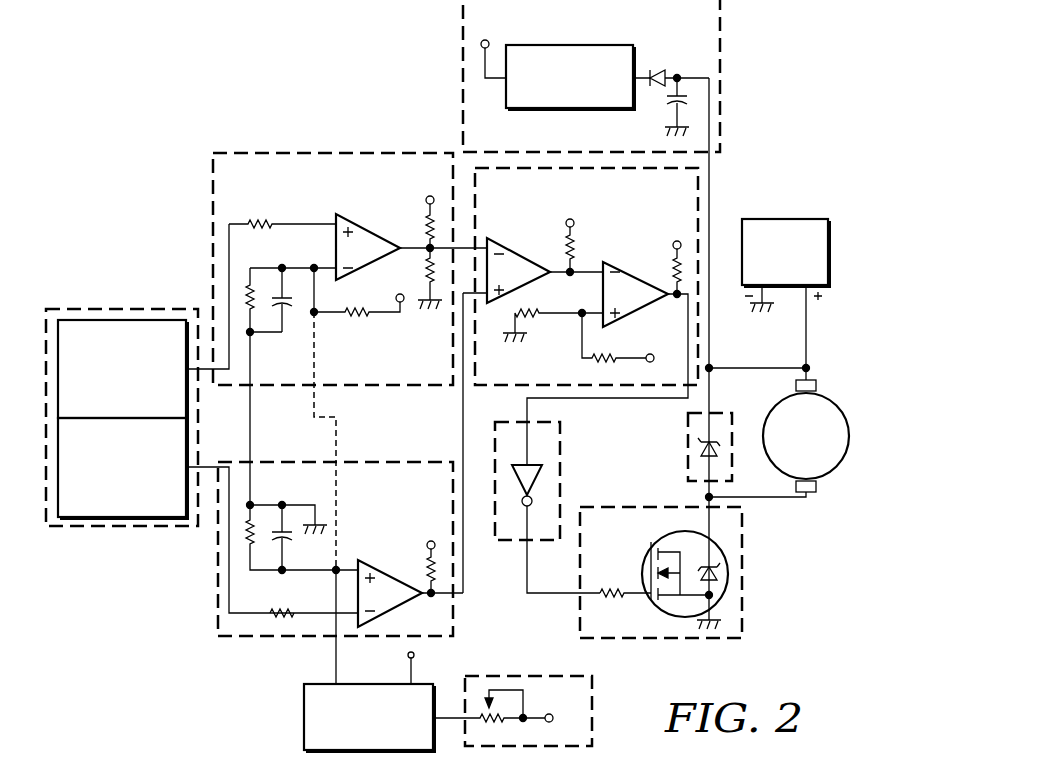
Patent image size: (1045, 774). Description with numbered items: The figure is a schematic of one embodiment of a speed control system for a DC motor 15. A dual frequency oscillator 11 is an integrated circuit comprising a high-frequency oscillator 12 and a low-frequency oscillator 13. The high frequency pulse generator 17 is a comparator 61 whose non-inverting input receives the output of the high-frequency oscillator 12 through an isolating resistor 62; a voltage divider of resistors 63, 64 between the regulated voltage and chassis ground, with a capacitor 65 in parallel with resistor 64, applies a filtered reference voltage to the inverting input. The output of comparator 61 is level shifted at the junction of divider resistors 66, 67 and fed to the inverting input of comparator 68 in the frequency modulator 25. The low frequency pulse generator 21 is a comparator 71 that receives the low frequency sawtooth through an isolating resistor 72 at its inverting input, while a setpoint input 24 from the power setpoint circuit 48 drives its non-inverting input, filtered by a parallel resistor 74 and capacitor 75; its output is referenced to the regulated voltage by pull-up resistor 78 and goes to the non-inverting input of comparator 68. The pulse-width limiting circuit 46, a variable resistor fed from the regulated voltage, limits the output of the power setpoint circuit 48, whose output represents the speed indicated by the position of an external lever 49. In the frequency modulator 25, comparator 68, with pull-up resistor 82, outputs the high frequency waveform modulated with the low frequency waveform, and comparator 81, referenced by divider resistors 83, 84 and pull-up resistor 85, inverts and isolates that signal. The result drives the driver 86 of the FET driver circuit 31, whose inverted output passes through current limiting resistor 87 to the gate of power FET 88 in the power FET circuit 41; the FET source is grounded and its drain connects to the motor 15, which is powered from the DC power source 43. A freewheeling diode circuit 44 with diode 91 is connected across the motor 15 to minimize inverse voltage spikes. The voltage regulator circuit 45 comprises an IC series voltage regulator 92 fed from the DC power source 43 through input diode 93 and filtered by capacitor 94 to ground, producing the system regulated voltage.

The dual frequency oscillator 11 is at (83, 528).
The high-frequency oscillator 12 is at (122, 320).
The low-frequency oscillator 13 is at (124, 526).
The DC motor 15 is at (822, 392).
The high frequency pulse generator 17 is at (327, 196).
The low frequency pulse generator 21 is at (218, 600).
The setpoint input 24 is at (98, 6).
The frequency modulator 25 is at (655, 207).
The FET driver circuit 31 is at (506, 545).
The power FET circuit 41 is at (743, 578).
The DC power source 43 is at (785, 219).
The freewheeling diode circuit 44 is at (688, 425).
The voltage regulator circuit 45 is at (722, 62).
The pulse-width limiting circuit 46 is at (594, 696).
The power setpoint circuit 48 is at (304, 722).
The external lever 49 is at (406, 670).
The comparator 61 is at (334, 244).
The isolating resistor 62 is at (252, 220).
The resistor 63 is at (360, 318).
The resistor 64 is at (255, 335).
The capacitor 65 is at (254, 290).
The resistor 66 is at (426, 216).
The resistor 67 is at (426, 262).
The comparator 68 is at (506, 250).
The comparator 71 is at (376, 562).
The isolating resistor 72 is at (294, 610).
The resistor 74 is at (256, 515).
The capacitor 75 is at (280, 560).
The pull-up resistor 78 is at (427, 565).
The comparator 81 is at (601, 300).
The pull-up resistor 82 is at (576, 232).
The resistor 83 is at (605, 350).
The resistor 84 is at (545, 320).
The pull-up resistor 85 is at (670, 268).
The driver 86 is at (545, 480).
The current limiting resistor 87 is at (618, 588).
The power FET 88 is at (656, 545).
The freewheeling diode 91 is at (699, 448).
The IC series voltage regulator 92 is at (573, 45).
The input diode 93 is at (653, 70).
The filtering capacitor 94 is at (668, 114).